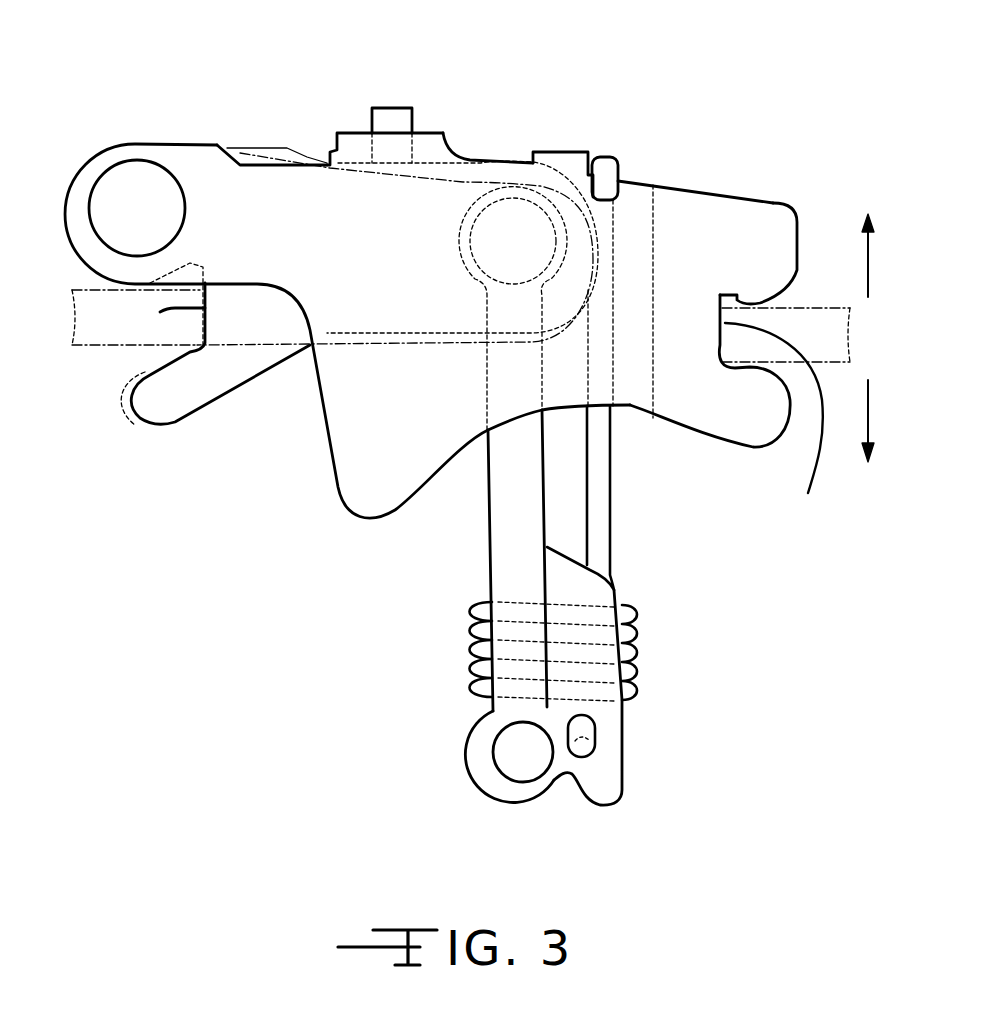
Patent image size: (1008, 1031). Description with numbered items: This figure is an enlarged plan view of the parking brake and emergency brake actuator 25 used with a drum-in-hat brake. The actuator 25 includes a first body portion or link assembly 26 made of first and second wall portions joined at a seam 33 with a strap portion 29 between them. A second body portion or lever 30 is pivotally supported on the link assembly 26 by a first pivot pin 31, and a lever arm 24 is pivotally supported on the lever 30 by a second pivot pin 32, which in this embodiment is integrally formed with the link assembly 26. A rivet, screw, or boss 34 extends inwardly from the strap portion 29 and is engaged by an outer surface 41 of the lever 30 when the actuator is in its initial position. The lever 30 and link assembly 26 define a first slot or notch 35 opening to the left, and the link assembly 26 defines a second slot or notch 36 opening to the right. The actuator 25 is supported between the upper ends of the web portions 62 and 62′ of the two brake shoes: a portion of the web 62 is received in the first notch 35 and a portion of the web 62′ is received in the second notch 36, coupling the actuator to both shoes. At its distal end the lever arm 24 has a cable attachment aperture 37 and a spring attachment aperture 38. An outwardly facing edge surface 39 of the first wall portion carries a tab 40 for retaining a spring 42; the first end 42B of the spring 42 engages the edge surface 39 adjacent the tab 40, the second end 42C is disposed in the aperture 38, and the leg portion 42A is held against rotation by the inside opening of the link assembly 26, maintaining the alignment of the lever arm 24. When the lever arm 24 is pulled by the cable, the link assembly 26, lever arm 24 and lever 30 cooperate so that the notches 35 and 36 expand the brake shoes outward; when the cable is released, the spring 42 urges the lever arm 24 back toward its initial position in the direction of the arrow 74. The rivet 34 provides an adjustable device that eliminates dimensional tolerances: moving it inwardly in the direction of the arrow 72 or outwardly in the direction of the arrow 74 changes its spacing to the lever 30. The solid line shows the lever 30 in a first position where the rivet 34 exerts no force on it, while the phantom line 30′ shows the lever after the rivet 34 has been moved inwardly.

The parking brake and emergency brake actuator 25 is at (70, 122).
The first pivot pin 31 is at (137, 172).
The strap portion 29 is at (337, 148).
The rivet, screw, or boss 34 is at (382, 112).
The outer surface 41 is at (438, 172).
The second pivot pin 32 is at (502, 218).
The tab 40 is at (555, 153).
The first end of the spring 42B is at (602, 157).
The seam 33 is at (655, 210).
The outwardly facing edge surface 39 is at (707, 190).
The link assembly 26 is at (770, 210).
The arrow 74 is at (868, 253).
The arrow 72 is at (868, 423).
The web portion 62 is at (87, 298).
The web portion 62′ is at (803, 323).
The first slot or notch 35 is at (160, 312).
The lever 30 is at (240, 400).
The lever in phantom line 30′ is at (122, 403).
The second slot or notch 36 is at (728, 409).
The leg portion of the spring 42A is at (603, 468).
The lever arm 24 is at (505, 558).
The spring 42 is at (637, 628).
The second end of the spring 42C is at (585, 723).
The spring attachment aperture 38 is at (593, 748).
The cable attachment aperture 37 is at (503, 772).